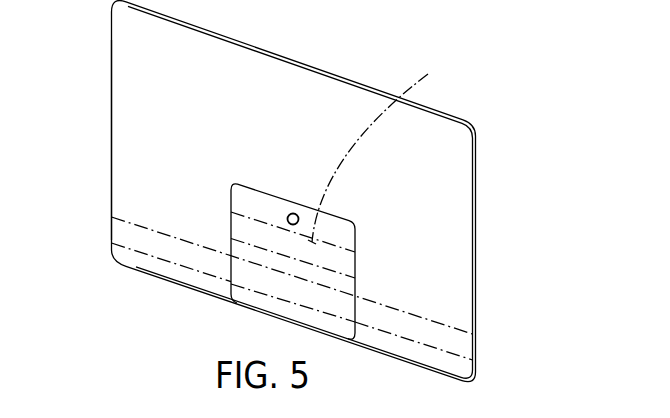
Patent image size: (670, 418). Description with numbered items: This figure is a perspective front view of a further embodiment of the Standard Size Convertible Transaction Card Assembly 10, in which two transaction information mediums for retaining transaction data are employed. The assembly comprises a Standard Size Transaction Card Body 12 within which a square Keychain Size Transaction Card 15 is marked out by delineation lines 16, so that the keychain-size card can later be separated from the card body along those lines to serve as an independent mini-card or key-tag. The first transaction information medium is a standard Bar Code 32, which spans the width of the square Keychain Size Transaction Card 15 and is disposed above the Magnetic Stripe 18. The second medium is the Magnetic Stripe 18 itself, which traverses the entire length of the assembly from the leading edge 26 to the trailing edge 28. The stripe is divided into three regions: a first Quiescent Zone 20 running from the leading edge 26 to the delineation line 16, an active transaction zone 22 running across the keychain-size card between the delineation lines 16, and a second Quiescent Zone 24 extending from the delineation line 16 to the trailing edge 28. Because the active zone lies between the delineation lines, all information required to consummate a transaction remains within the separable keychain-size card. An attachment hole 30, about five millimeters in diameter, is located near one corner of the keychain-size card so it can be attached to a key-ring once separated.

The Standard Size Convertible Transaction Card Assembly 10 is at (571, 141).
The Standard Size Transaction Card Body 12 is at (467, 170).
The square Keychain Size Transaction Card 15 is at (337, 231).
The delineation line 16 is at (268, 193).
The Magnetic Stripe 18 is at (456, 338).
The first Quiescent Zone 20 is at (176, 264).
The active (transaction) zone 22 is at (268, 292).
The second Quiescent Zone 24 is at (419, 341).
The leading edge 26 is at (110, 152).
The trailing edge 28 is at (478, 217).
The attachment hole 30 is at (296, 212).
The Bar Code 32 is at (382, 151).